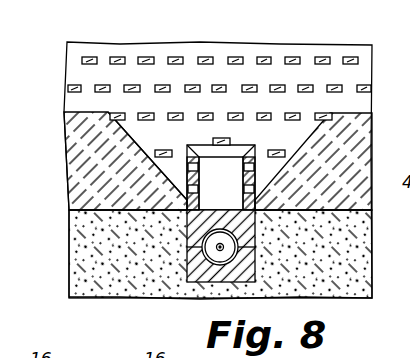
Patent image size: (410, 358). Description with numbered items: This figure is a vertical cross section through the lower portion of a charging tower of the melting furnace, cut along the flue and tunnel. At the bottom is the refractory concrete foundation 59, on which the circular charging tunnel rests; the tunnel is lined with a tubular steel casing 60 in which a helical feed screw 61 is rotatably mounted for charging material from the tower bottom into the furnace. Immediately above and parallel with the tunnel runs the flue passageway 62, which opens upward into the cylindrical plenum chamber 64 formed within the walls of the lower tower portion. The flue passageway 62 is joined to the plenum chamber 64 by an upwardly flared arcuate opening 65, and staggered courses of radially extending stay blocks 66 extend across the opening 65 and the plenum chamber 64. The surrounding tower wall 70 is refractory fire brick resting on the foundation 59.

The foundation 59 is at (344, 292).
The tubular steel casing 60 is at (221, 246).
The helical feed screw 61 is at (193, 283).
The flue passageway 62 is at (244, 163).
The cylindrical plenum chamber 64 is at (347, 114).
The upwardly flared arcuate opening 65 is at (134, 149).
The stay block 66 is at (98, 83).
The tower wall 70 is at (80, 173).